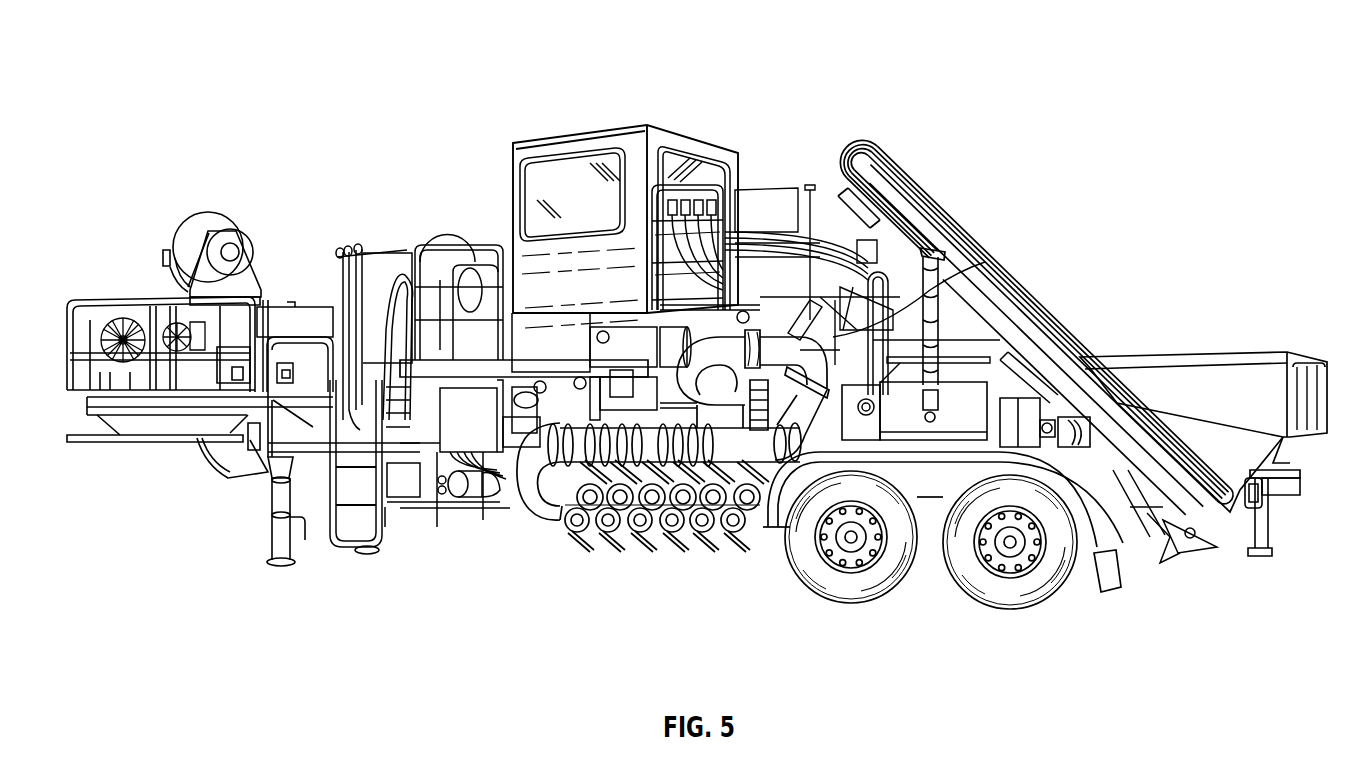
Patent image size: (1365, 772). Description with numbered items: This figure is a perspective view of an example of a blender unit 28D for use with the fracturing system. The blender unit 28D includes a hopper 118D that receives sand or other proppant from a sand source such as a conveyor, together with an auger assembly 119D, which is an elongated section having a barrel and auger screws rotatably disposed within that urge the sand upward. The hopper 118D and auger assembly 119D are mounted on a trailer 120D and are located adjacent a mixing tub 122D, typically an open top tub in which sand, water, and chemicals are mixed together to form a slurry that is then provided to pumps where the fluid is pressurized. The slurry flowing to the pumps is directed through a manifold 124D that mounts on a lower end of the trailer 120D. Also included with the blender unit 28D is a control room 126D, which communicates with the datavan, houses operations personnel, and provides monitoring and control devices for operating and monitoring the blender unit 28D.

The blender unit 28D is at (682, 77).
The control room 126D is at (552, 137).
The auger assembly 119D is at (959, 237).
The mixing tub 122D is at (890, 333).
The trailer 120D is at (508, 503).
The manifold 124D is at (664, 571).
The hopper 118D is at (1272, 533).